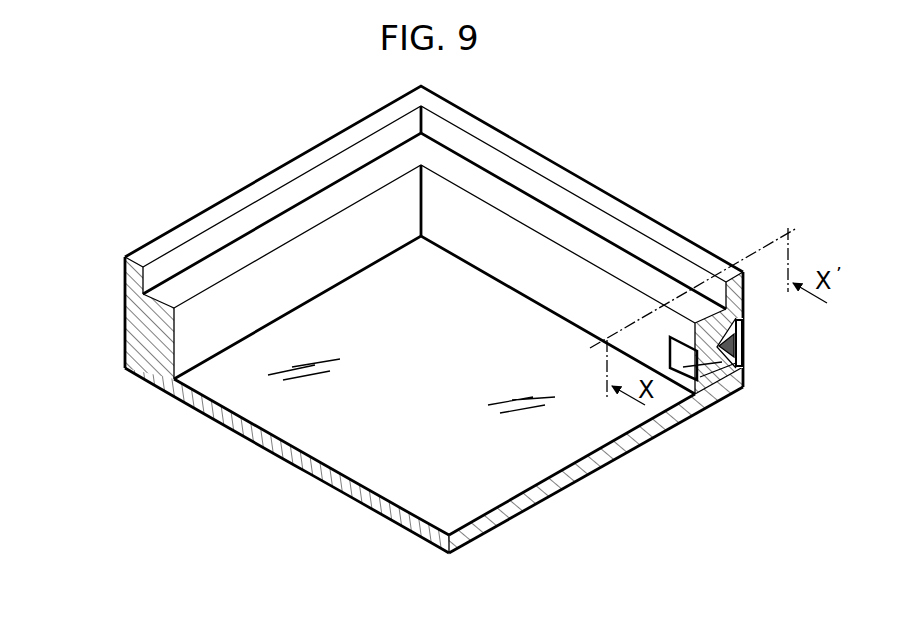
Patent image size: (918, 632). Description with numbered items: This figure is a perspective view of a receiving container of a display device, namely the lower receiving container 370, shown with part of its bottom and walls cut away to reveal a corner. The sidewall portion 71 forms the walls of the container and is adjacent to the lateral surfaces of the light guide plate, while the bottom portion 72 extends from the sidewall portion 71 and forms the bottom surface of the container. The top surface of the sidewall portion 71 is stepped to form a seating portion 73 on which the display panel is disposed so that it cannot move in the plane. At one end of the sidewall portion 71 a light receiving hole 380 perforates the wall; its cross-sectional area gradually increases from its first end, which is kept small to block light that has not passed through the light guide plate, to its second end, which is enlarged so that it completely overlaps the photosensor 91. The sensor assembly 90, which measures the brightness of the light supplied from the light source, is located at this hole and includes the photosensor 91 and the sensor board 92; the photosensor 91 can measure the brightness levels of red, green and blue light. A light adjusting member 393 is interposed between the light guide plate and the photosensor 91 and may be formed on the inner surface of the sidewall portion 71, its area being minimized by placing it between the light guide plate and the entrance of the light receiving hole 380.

The lower receiving container 370 is at (53, 321).
The seating portion 73 is at (143, 293).
The sidewall portion 71 is at (140, 340).
The bottom portion 72 is at (205, 413).
The sensor assembly 90 is at (813, 327).
The sensor board 92 is at (742, 326).
The photosensor 91 is at (742, 345).
The light receiving hole 380 is at (742, 368).
The light adjusting member 393 is at (730, 393).